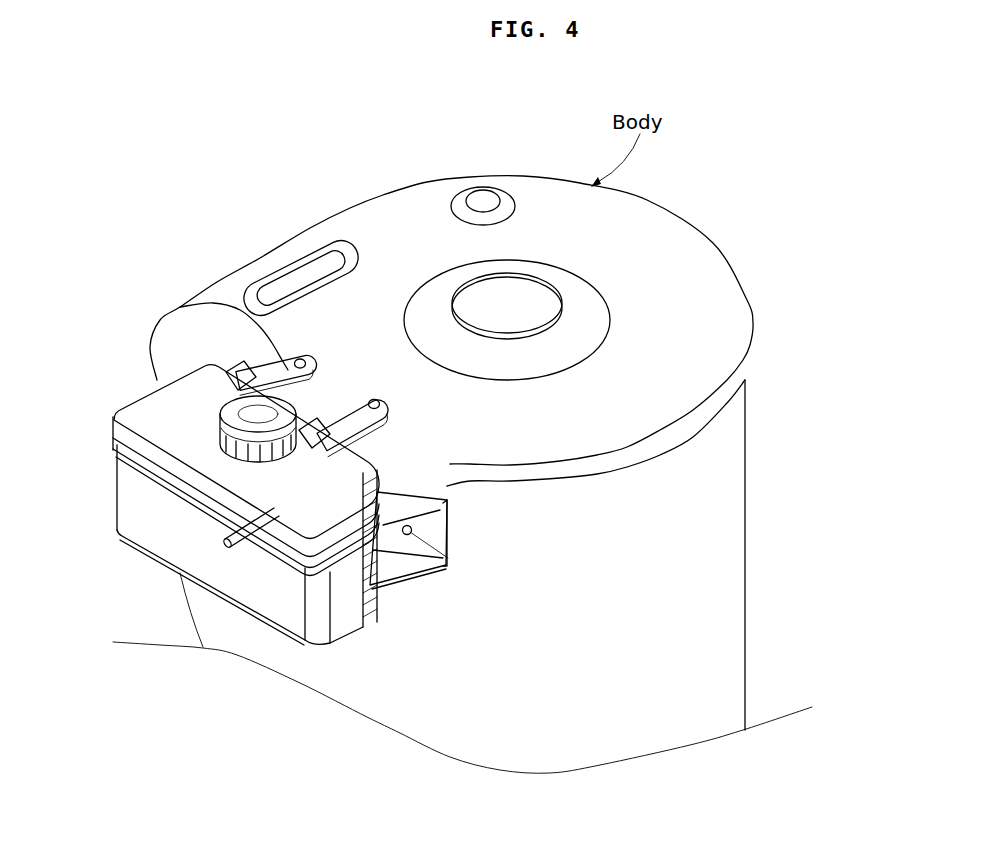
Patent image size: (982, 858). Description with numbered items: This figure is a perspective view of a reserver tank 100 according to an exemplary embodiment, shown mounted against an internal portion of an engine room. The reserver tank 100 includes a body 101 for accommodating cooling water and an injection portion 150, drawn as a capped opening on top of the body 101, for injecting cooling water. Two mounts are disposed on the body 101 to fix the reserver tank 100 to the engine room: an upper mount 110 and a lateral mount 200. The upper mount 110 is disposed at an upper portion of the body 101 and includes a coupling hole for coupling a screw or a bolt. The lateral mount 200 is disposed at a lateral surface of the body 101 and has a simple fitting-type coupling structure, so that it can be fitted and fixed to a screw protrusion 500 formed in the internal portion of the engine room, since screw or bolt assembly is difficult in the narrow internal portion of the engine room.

The reserver tank 100 is at (126, 382).
The body 101 is at (263, 590).
The upper mount 110 is at (277, 357).
The injection portion 150 is at (257, 422).
The lateral mount 200 is at (404, 585).
The screw protrusion 500 is at (450, 573).